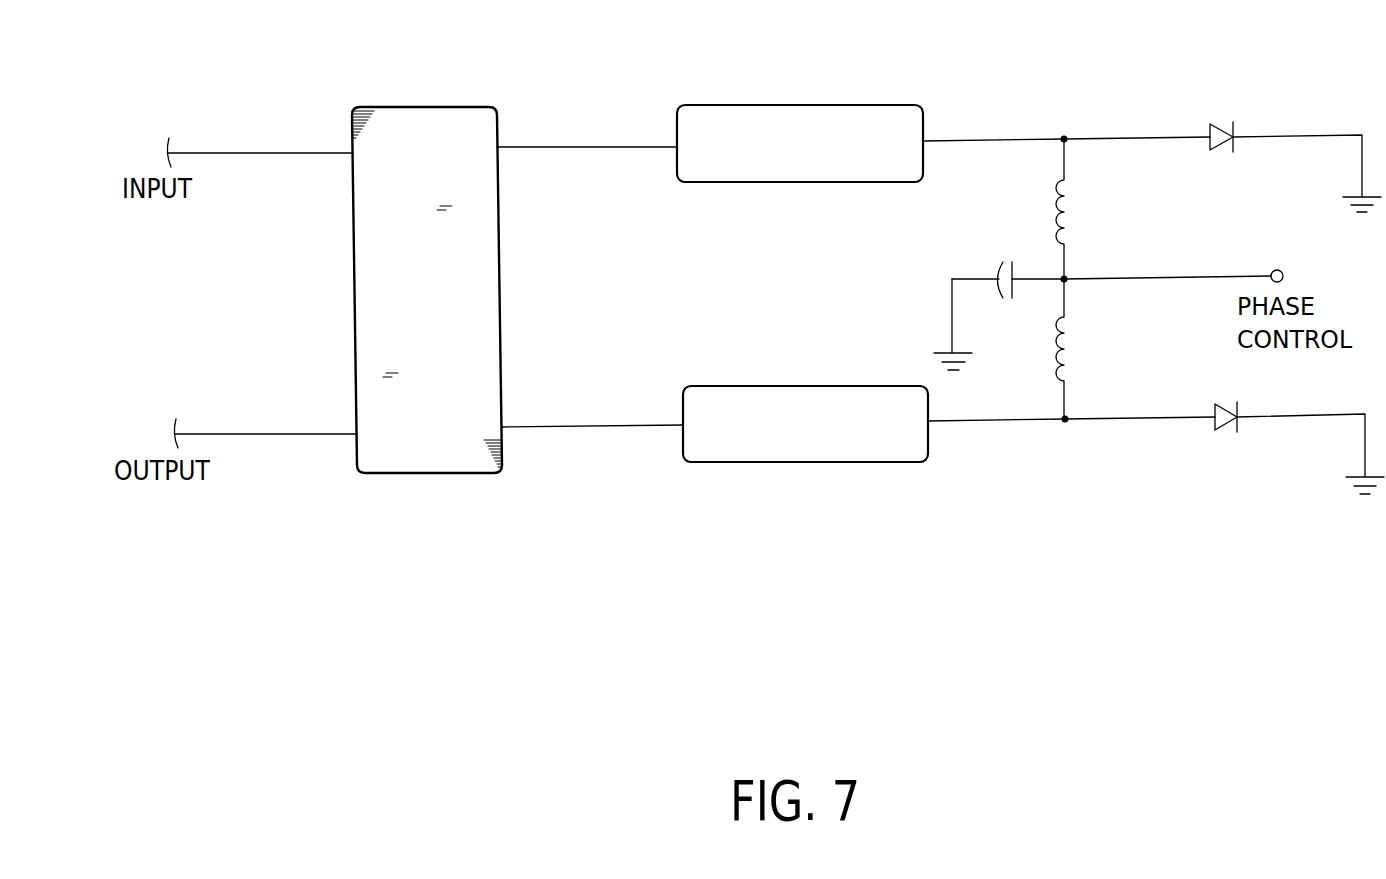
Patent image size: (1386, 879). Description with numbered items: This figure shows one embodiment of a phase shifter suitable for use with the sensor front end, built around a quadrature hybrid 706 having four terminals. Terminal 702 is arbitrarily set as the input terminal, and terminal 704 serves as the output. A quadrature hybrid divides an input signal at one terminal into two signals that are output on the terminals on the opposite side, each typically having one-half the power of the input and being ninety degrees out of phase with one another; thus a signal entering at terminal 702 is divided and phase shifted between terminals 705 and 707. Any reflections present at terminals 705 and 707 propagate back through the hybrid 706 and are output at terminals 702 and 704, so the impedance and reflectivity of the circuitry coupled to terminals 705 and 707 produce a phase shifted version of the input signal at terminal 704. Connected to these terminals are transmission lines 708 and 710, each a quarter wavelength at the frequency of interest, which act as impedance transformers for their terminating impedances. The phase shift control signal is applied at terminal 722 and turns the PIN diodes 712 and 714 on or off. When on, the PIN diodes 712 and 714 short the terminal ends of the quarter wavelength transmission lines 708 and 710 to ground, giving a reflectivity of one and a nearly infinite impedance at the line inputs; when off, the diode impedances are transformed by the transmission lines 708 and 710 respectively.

The input terminal 702 is at (263, 148).
The output terminal 704 is at (282, 430).
The hybrid terminal 705 is at (499, 150).
The quadrature hybrid 706 is at (457, 104).
The hybrid terminal 707 is at (504, 430).
The quarter wavelength transmission line 708 is at (728, 183).
The quarter wavelength transmission line 710 is at (732, 465).
The PIN diode 712 is at (1220, 122).
The PIN diode 714 is at (1225, 431).
The phase shift control terminal 722 is at (1279, 269).